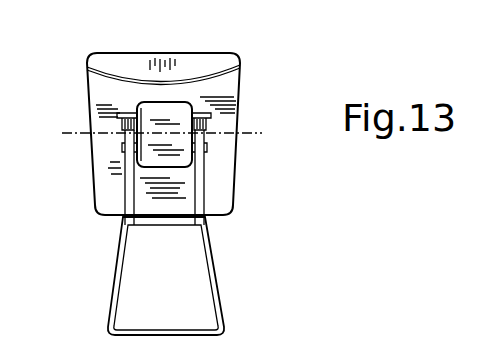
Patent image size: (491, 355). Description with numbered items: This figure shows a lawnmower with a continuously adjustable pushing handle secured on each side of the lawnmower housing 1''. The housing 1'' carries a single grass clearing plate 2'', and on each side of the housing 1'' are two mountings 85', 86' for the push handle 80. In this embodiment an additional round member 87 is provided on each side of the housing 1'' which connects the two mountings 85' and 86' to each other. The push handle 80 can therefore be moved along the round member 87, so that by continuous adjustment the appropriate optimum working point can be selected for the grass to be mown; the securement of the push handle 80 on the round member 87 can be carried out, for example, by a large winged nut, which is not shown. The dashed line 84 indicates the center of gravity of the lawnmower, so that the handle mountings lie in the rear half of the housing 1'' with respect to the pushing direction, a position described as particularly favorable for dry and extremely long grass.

The lawnmower housing 1'' is at (192, 134).
The grass clearing plate 2'' is at (166, 50).
The center of gravity line 84 is at (88, 140).
The round member 87 is at (242, 128).
The mounting 86' is at (170, 111).
The mounting 85' is at (171, 177).
The push handle 80 is at (215, 297).